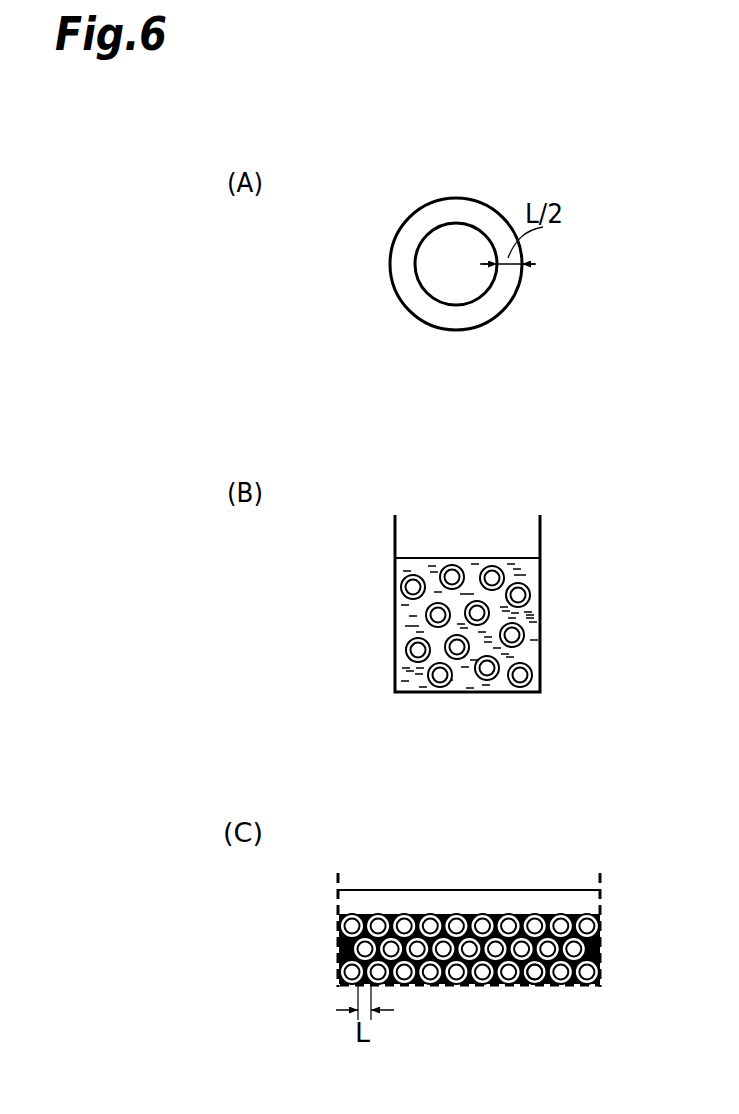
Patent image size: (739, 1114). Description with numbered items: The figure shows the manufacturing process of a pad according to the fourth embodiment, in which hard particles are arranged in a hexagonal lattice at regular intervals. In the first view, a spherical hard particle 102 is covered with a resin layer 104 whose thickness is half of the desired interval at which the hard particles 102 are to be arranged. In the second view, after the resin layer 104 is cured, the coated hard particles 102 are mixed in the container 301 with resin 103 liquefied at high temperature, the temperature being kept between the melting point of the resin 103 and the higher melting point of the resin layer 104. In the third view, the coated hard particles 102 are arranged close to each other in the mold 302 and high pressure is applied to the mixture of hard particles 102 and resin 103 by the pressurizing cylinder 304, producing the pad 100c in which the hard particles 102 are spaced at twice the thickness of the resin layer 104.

The hard particles 102 is at (463, 240).
The resin layer 104 is at (502, 293).
The resin 103 is at (533, 650).
The container 301 is at (541, 540).
The mold 302 is at (602, 940).
The pressurizing cylinder 304 is at (543, 898).
The pad 100c is at (320, 953).